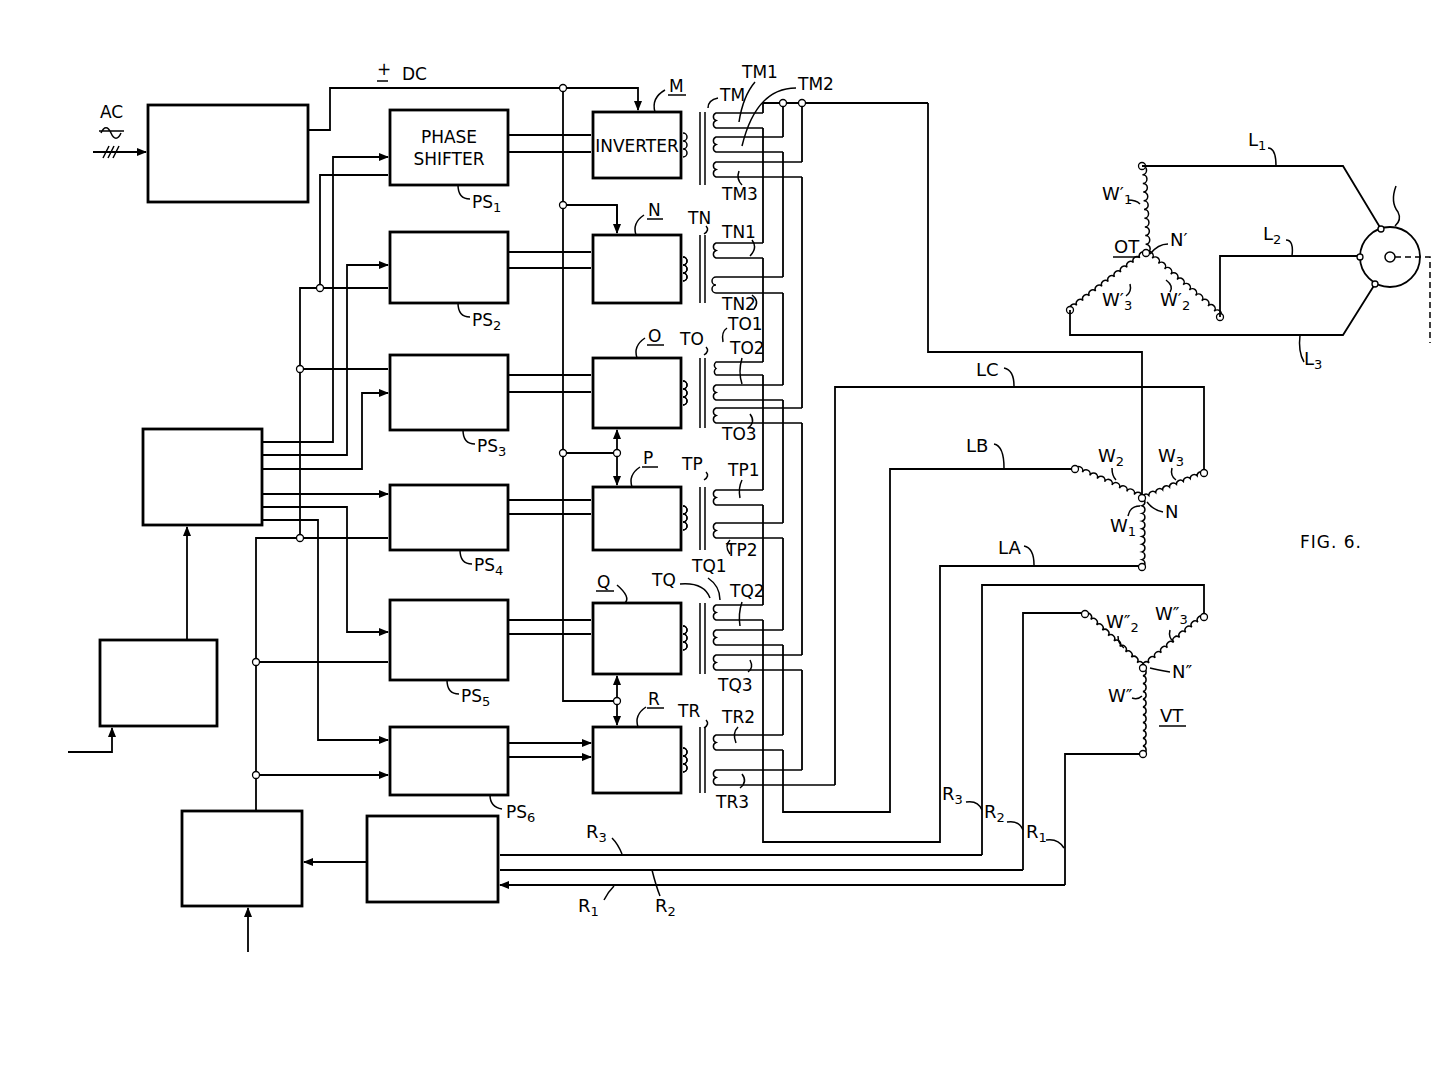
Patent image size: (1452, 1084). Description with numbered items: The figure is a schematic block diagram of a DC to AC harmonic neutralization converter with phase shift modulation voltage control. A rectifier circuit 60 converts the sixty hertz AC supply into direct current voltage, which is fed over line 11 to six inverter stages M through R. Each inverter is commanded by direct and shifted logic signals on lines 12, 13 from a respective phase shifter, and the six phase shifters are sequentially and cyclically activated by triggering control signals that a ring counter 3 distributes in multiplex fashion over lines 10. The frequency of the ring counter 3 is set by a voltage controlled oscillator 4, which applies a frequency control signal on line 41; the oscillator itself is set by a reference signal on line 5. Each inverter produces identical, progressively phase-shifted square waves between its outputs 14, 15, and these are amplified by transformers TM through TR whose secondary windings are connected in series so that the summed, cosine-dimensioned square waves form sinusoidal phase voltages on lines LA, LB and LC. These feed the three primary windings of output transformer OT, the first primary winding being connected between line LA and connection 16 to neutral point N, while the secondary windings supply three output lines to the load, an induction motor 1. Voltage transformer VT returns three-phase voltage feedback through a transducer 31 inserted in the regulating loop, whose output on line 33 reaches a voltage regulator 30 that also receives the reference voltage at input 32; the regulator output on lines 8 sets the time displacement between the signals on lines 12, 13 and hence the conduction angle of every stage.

The induction motor 1 is at (1405, 307).
The ring counter 3 is at (178, 429).
The voltage controlled oscillator 4 is at (136, 640).
The reference signal line 5 is at (98, 756).
The voltage regulator output lines 8 is at (319, 242).
The triggering control lines 10 is at (347, 234).
The DC supply line 11 is at (585, 86).
The direct logic command line 12 is at (546, 134).
The shifted logic command line 13 is at (544, 153).
The inverter output 14 is at (678, 263).
The inverter output 15 is at (678, 277).
The connection to neutral point 16 is at (934, 84).
The voltage regulator 30 is at (182, 878).
The transducer 31 is at (414, 902).
The reference voltage input 32 is at (246, 920).
The transducer output line 33 is at (356, 868).
The frequency control signal line 41 is at (187, 576).
The rectifier circuit 60 is at (213, 105).